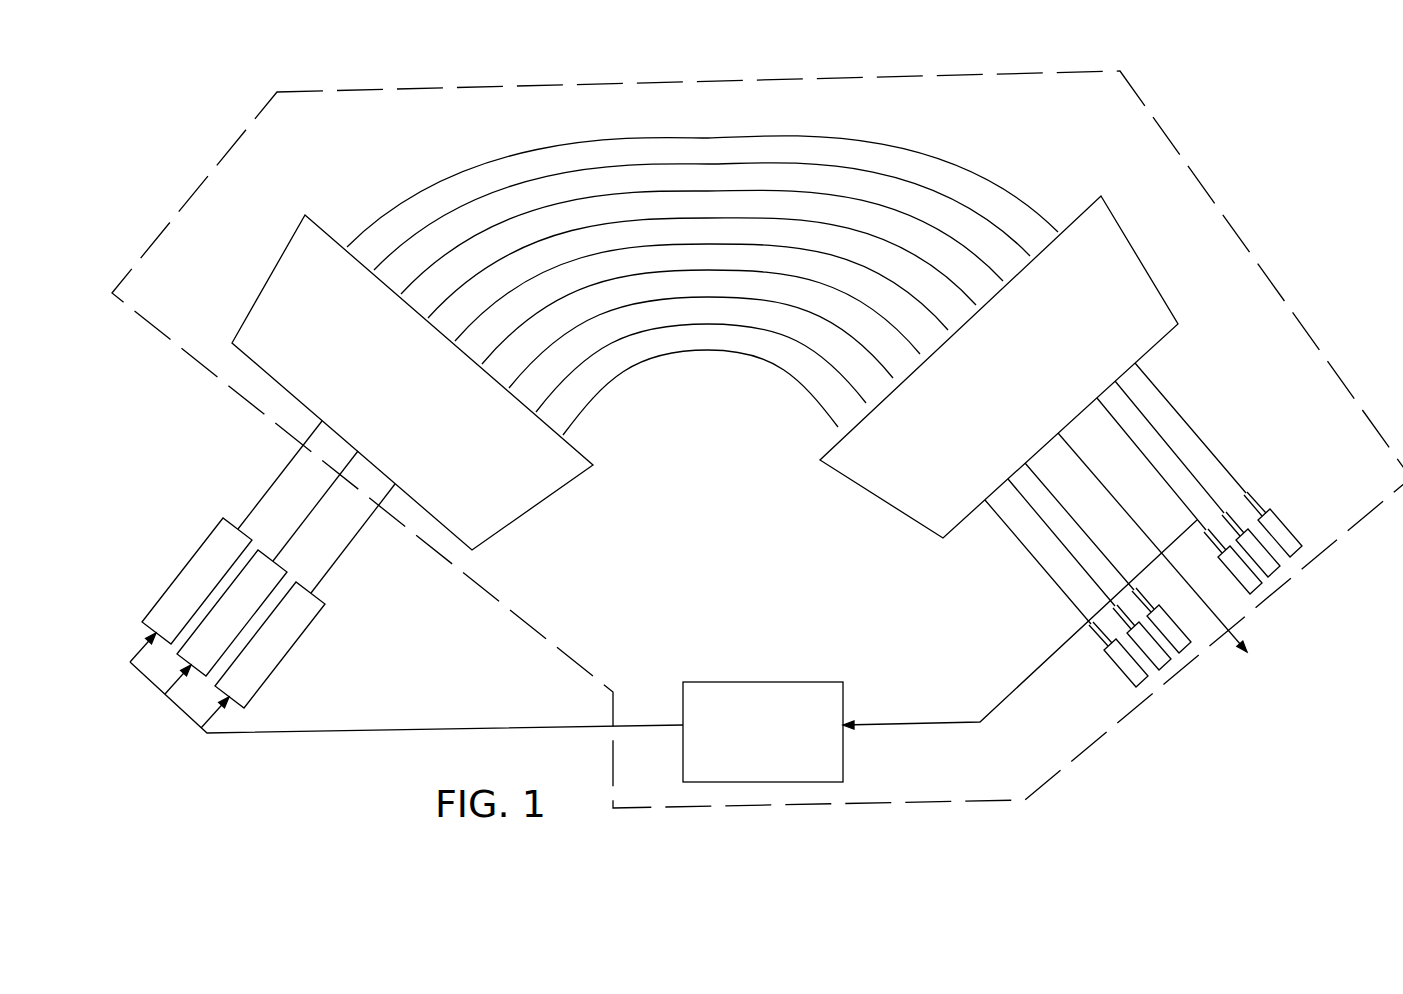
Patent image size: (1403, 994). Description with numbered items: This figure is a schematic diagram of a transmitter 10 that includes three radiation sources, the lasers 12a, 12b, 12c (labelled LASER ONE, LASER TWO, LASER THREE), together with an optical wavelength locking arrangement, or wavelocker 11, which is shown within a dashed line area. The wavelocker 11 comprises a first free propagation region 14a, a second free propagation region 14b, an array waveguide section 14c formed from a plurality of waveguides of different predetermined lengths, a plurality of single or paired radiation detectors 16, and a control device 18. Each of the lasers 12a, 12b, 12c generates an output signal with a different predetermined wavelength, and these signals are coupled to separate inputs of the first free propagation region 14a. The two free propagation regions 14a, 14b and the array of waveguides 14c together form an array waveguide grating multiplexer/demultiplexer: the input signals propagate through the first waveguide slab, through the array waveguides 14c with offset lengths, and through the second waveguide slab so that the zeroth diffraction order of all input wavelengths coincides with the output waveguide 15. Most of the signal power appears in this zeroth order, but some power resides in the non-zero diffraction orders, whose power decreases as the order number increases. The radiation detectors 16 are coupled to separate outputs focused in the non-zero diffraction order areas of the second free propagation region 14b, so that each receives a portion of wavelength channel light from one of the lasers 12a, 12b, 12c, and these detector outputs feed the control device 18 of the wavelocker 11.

The transmitter 10 is at (413, 51).
The optical wavelength locking arrangement 11 is at (553, 78).
The laser 12a is at (192, 556).
The laser 12b is at (264, 552).
The laser 12c is at (286, 658).
The first free propagation region 14a is at (268, 278).
The second free propagation region 14b is at (1145, 268).
The array waveguide section 14c is at (793, 220).
The output waveguide 15 is at (1127, 512).
The radiation detectors 16 is at (1184, 643).
The control device 18 is at (788, 682).